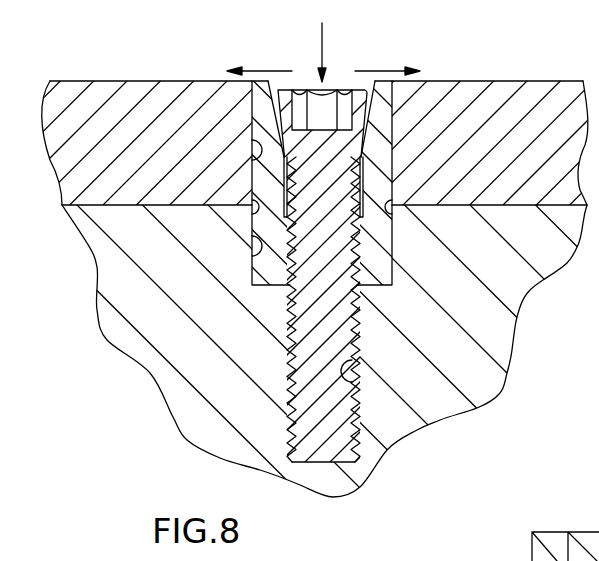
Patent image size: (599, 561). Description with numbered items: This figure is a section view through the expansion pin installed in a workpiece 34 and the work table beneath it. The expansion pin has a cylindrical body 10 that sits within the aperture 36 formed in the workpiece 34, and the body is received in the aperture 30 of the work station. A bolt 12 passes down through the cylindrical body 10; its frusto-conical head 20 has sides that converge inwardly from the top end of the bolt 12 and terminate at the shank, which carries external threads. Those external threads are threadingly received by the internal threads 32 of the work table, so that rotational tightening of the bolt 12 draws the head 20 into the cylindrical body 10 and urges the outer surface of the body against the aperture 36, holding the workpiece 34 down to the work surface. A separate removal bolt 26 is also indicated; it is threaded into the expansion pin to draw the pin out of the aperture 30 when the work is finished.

The cylindrical body 10 is at (240, 81).
The bolt 12 is at (353, 333).
The frusto-conical head 20 is at (367, 107).
The bolt 26 is at (548, 537).
The aperture 30 is at (252, 238).
The internal threads 32 is at (352, 378).
The workpiece 34 is at (503, 88).
The aperture 36 is at (250, 150).